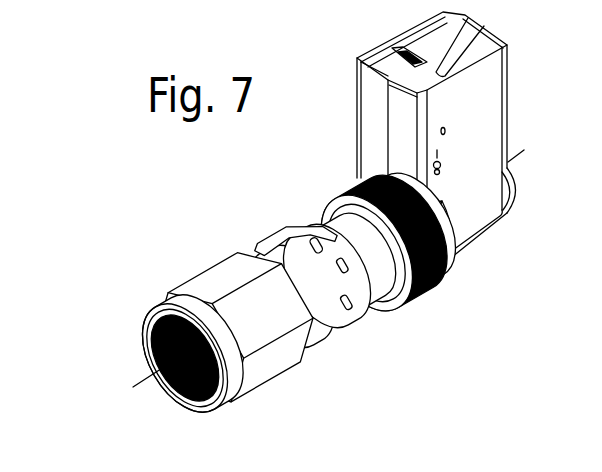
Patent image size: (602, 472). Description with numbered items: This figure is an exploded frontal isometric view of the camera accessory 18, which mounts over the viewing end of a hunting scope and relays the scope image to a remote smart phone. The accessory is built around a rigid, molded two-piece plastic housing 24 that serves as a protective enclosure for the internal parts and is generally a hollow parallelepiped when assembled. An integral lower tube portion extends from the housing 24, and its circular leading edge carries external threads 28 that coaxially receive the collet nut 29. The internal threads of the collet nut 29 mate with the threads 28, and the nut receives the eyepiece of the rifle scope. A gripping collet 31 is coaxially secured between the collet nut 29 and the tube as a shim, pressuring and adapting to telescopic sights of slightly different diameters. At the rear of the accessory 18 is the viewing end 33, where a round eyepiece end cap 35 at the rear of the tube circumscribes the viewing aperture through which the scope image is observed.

The camera accessory 18 is at (495, 252).
The housing 24 is at (513, 118).
The external threads 28 is at (413, 298).
The collet nut 29 is at (263, 367).
The gripping collet 31 is at (350, 330).
The viewing end 33 is at (525, 173).
The eyepiece end cap 35 is at (520, 195).